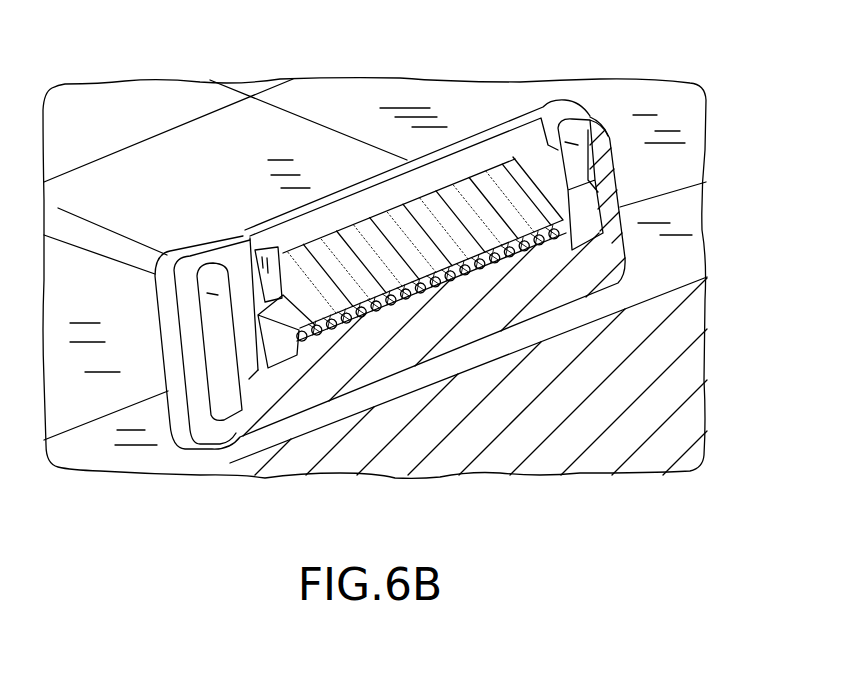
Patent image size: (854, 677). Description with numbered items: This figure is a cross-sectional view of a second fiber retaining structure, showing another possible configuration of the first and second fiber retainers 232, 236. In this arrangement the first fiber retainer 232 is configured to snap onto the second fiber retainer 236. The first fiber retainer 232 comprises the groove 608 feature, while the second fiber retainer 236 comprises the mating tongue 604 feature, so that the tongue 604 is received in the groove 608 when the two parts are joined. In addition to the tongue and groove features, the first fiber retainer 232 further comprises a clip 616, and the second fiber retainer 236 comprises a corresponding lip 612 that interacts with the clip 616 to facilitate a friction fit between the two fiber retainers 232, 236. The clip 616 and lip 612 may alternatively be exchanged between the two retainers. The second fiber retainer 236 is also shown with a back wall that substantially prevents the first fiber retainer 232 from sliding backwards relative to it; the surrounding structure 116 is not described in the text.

The housing 116 is at (308, 143).
The first fiber retainer 232 is at (513, 303).
The second fiber retainer 236 is at (550, 141).
The tongue 604 is at (262, 362).
The groove 608 is at (283, 367).
The lip 612 is at (256, 250).
The clip 616 is at (232, 280).